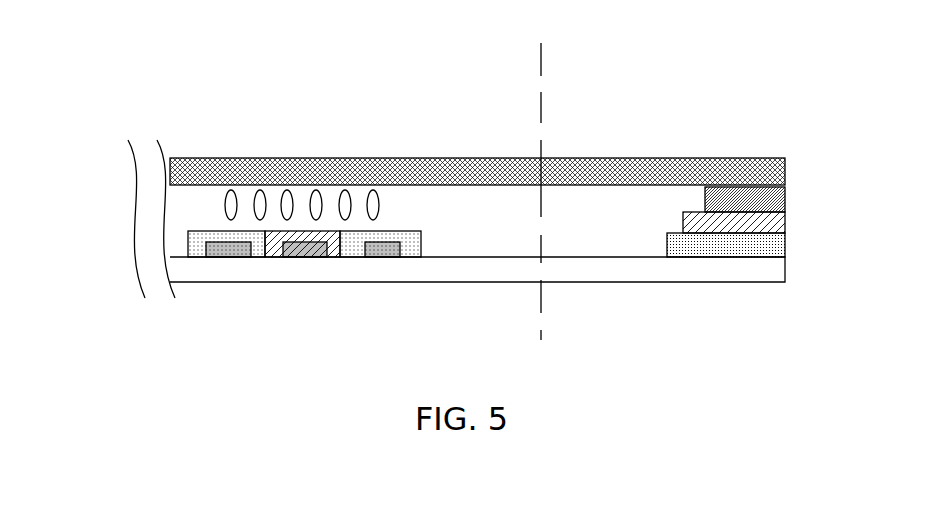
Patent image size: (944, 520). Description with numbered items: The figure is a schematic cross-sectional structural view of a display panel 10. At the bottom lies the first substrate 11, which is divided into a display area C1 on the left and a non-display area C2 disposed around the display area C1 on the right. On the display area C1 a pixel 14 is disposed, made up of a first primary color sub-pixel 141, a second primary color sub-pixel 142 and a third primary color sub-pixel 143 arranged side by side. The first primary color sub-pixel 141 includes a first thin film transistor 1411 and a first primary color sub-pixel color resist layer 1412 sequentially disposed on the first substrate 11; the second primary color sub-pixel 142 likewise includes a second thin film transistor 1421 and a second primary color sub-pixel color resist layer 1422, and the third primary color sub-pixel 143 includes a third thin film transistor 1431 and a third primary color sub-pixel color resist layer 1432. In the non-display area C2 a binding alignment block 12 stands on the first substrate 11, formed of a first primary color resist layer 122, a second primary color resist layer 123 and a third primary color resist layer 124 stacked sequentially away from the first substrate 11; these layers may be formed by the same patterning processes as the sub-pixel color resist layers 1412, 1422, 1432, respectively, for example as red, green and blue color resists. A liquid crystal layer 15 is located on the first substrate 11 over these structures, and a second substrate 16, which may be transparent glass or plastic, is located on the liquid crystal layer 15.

The display panel 10 is at (187, 48).
The first substrate 11 is at (777, 270).
The binding alignment block 12 is at (773, 222).
The first primary color resist layer 122 is at (762, 245).
The second primary color resist layer 123 is at (765, 222).
The third primary color resist layer 124 is at (763, 200).
The pixel 14 is at (241, 295).
The first primary color sub-pixel 141 is at (231, 303).
The first thin film transistor 1411 is at (233, 258).
The first primary color sub-pixel color resist layer 1412 is at (197, 258).
The second primary color sub-pixel 142 is at (310, 298).
The second thin film transistor 1421 is at (310, 258).
The second primary color sub-pixel color resist layer 1422 is at (280, 258).
The third primary color sub-pixel 143 is at (385, 298).
The third thin film transistor 1431 is at (383, 258).
The third primary color sub-pixel color resist layer 1432 is at (353, 258).
The liquid crystal layer 15 is at (225, 206).
The second substrate 16 is at (755, 175).
The display area C1 is at (365, 128).
The non-display area C2 is at (637, 128).